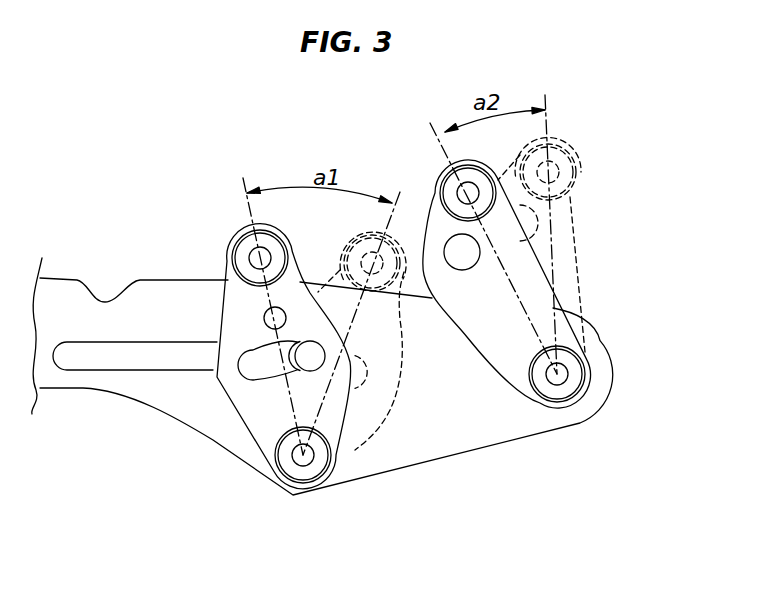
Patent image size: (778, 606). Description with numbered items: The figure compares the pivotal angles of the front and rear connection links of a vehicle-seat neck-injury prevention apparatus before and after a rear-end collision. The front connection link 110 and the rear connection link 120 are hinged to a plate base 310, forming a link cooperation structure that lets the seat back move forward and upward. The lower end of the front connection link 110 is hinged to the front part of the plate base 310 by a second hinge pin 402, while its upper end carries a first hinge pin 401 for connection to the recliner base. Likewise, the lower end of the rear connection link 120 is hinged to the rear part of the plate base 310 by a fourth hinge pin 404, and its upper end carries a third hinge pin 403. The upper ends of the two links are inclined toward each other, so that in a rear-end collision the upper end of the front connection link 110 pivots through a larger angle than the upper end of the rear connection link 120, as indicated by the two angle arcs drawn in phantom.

The front connection link 110 is at (255, 412).
The rear connection link 120 is at (500, 350).
The plate base 310 is at (405, 455).
The first hinge pin 401 is at (237, 242).
The second hinge pin 402 is at (297, 483).
The third hinge pin 403 is at (455, 180).
The fourth hinge pin 404 is at (563, 378).